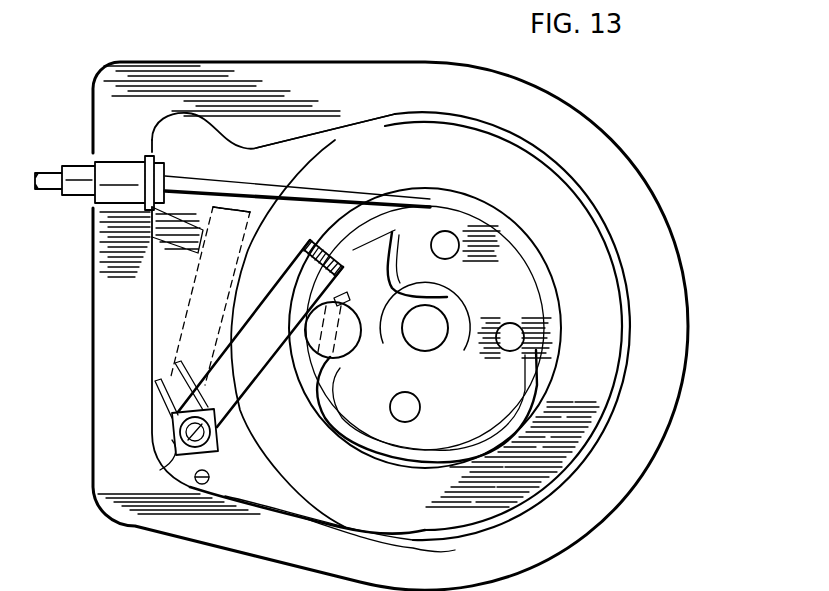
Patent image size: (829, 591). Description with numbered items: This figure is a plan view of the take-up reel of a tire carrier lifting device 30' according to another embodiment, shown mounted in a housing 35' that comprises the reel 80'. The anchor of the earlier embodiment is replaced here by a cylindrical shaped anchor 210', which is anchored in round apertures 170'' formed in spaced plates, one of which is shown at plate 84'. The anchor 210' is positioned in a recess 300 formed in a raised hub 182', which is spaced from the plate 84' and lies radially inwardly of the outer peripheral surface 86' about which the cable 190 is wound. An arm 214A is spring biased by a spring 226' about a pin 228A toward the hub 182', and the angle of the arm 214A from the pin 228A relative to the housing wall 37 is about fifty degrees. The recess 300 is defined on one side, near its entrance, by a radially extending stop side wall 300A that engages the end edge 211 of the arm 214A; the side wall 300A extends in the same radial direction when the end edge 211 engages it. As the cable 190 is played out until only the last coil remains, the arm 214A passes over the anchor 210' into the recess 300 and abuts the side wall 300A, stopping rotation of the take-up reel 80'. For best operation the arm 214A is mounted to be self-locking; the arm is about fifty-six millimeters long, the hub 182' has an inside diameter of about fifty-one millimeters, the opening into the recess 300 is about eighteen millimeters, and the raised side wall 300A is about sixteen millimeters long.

The tire carrier lifting device 30' is at (396, 304).
The housing 35' is at (390, 304).
The reel 80' is at (578, 326).
The plate 84' is at (332, 542).
The outer peripheral surface 86' is at (344, 153).
The raised hub 182' is at (502, 339).
The cable 190 is at (203, 180).
The end edge 211 is at (336, 238).
The arm 214A is at (280, 300).
The cylindrical shaped anchor 210' is at (260, 334).
The spring 226' is at (124, 426).
The pin 228A is at (200, 417).
The housing wall 37 is at (205, 468).
The round apertures 170'' is at (389, 345).
The recess 300 is at (437, 297).
The stop side wall 300A is at (395, 230).